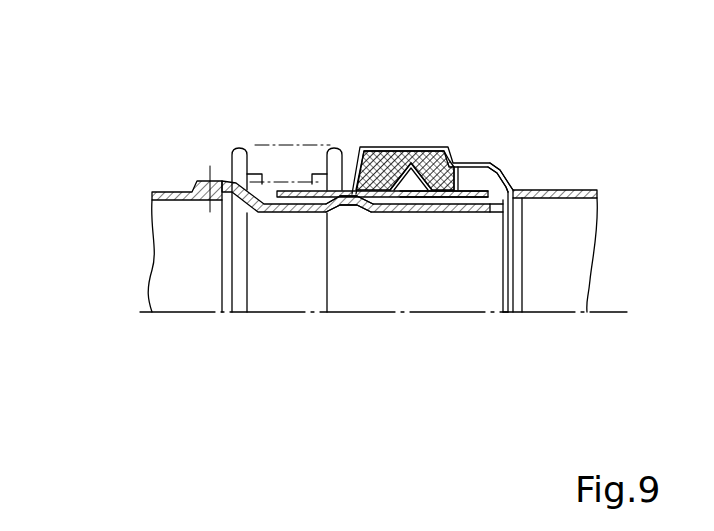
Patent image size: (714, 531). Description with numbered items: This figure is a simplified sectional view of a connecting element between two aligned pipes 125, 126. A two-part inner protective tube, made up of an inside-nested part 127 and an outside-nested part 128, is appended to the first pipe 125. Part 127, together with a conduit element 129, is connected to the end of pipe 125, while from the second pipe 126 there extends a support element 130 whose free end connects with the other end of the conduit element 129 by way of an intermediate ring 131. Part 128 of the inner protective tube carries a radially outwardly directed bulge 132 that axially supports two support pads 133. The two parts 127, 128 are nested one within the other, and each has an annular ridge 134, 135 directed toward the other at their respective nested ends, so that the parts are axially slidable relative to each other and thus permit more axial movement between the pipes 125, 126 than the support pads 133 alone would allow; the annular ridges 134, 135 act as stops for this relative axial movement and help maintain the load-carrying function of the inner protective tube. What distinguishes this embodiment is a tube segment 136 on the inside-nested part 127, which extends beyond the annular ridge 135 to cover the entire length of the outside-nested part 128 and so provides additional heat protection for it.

The pipe 125 is at (176, 200).
The pipe 126 is at (568, 190).
The part of inner protective tube 127 is at (252, 207).
The part of inner protective tube 128 is at (433, 200).
The conduit element 129 is at (233, 162).
The support element 130 is at (512, 183).
The intermediate ring 131 is at (355, 160).
The radially outwardly directed bulge 132 is at (412, 192).
The support pads 133 is at (370, 152).
The annular ridge 134 is at (298, 186).
The annular ridge 135 is at (347, 213).
The tube segment 136 is at (484, 200).